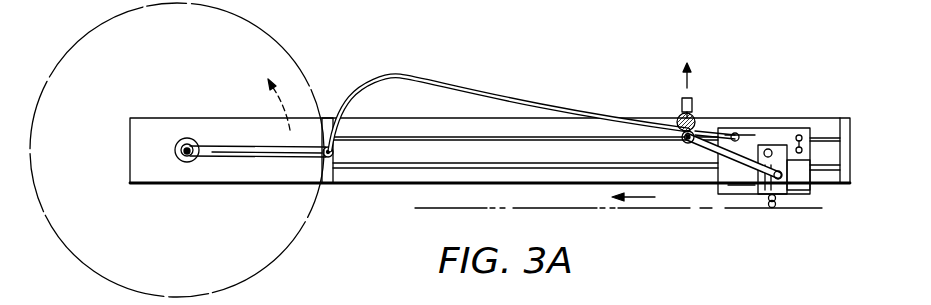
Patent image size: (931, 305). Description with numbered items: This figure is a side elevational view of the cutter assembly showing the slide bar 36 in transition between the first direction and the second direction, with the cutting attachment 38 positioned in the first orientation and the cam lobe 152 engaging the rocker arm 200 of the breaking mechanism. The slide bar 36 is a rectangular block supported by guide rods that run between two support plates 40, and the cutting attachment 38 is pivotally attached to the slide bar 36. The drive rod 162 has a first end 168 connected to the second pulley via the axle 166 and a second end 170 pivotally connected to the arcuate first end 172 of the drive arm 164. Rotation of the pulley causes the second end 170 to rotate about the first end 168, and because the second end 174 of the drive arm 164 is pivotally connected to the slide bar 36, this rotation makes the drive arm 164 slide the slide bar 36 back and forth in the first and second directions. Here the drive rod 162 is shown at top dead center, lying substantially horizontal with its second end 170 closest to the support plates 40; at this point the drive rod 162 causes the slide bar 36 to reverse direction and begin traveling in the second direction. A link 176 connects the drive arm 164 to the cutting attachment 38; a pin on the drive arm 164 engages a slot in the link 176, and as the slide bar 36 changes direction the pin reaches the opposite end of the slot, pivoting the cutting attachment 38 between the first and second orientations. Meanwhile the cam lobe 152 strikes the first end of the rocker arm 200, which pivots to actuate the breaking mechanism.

The slide bar 36 is at (812, 128).
The cutting attachment 38 is at (785, 198).
The support plates 40 is at (330, 185).
The cam lobe 152 is at (697, 112).
The drive rod 162 is at (260, 150).
The drive arm 164 is at (437, 90).
The axle 166 is at (196, 160).
The first end of the drive rod 168 is at (180, 149).
The second end of the drive rod 170 is at (333, 151).
The arcuate first end of the drive arm 172 is at (314, 168).
The second end of the drive arm 174 is at (737, 132).
The link 176 is at (686, 155).
The rocker arm 200 is at (680, 100).